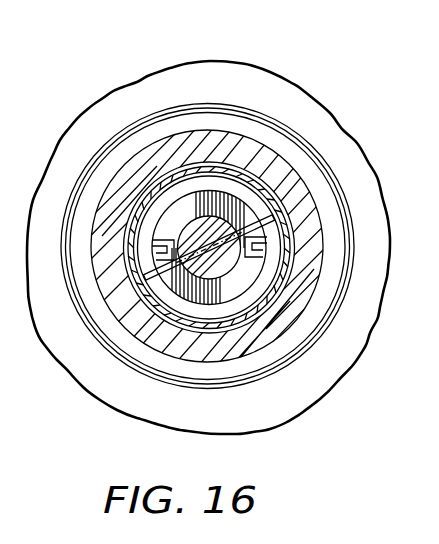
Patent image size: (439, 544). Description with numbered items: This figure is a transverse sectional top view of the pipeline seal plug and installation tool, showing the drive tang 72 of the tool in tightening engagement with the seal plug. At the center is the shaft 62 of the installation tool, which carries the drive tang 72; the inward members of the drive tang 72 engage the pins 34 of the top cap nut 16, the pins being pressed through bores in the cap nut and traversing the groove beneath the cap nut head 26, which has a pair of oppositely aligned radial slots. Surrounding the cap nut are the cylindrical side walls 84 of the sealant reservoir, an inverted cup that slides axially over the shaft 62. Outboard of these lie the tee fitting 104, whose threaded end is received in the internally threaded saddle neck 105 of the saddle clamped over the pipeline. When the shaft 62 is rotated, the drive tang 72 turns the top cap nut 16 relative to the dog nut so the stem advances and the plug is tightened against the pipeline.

The saddle neck 105 is at (296, 97).
The tee fitting 104 is at (297, 183).
The pins 34 is at (267, 238).
The top cap nut 16 is at (160, 214).
The cap nut head 26 is at (192, 195).
The shaft 62 is at (178, 263).
The side walls 84 is at (216, 330).
The drive tang 72 is at (213, 253).